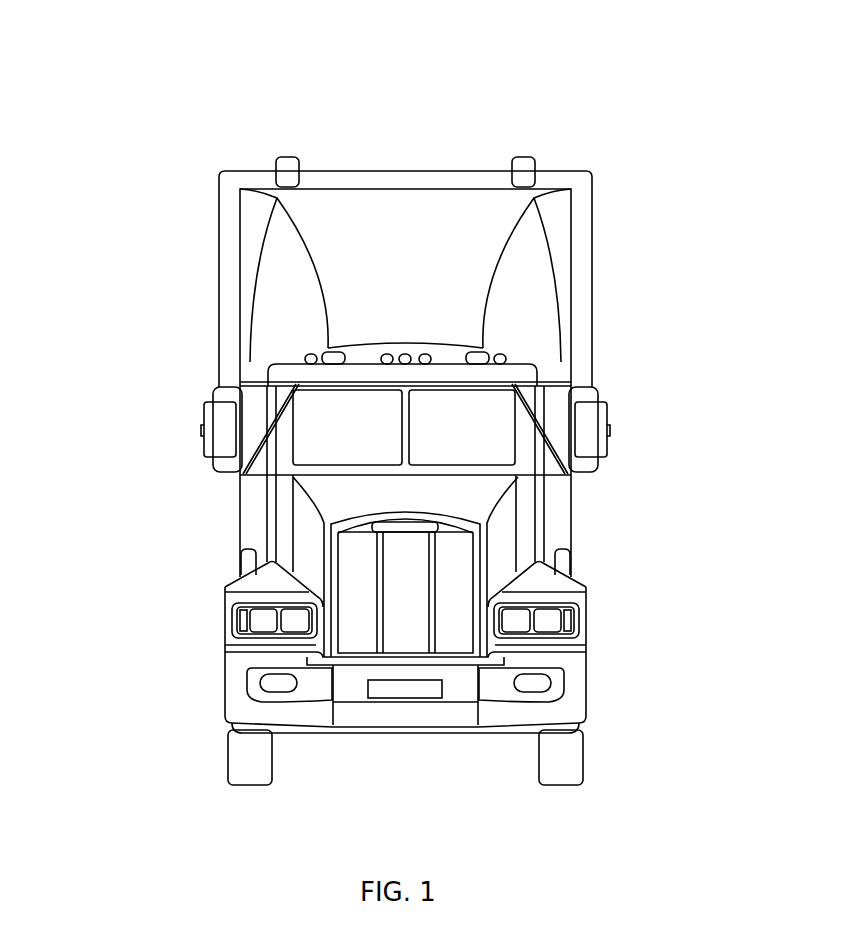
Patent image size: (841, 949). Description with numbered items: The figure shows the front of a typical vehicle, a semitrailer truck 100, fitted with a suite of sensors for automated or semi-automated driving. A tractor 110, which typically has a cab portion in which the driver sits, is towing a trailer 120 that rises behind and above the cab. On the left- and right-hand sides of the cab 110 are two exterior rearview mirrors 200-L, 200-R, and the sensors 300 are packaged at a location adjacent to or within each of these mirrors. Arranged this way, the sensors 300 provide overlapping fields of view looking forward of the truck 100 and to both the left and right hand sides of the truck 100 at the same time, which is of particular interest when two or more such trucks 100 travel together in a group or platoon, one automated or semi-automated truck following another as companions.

The semitrailer truck 100 is at (163, 71).
The trailer 120 is at (593, 202).
The tractor 110 is at (225, 583).
The sensors 300 is at (208, 395).
The right exterior rearview mirror 200-R is at (204, 428).
The left exterior rearview mirror 200-L is at (607, 428).